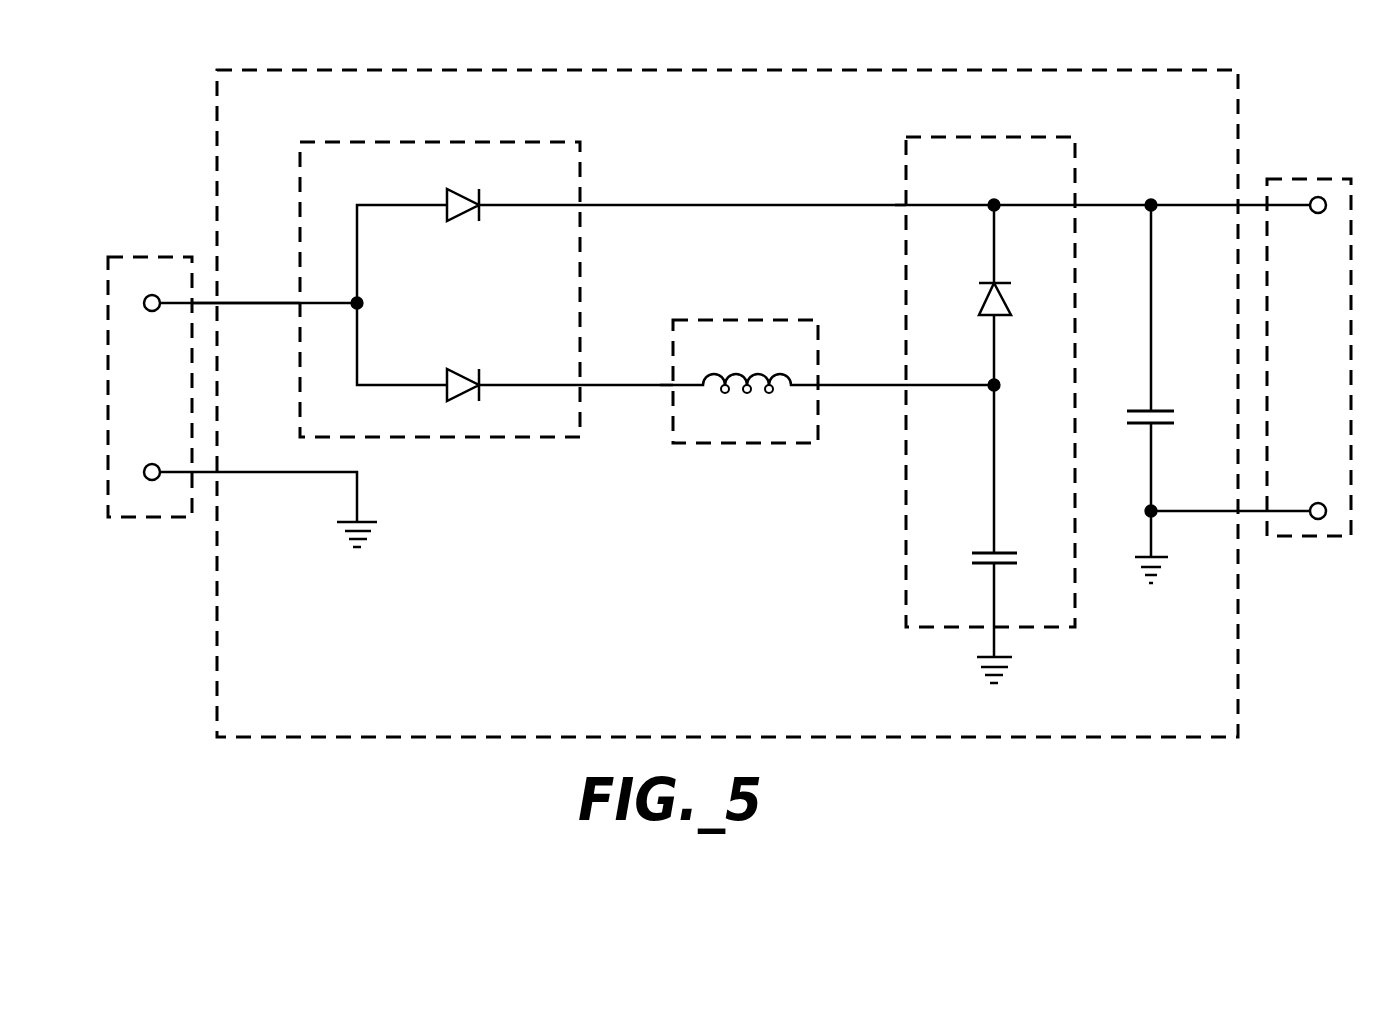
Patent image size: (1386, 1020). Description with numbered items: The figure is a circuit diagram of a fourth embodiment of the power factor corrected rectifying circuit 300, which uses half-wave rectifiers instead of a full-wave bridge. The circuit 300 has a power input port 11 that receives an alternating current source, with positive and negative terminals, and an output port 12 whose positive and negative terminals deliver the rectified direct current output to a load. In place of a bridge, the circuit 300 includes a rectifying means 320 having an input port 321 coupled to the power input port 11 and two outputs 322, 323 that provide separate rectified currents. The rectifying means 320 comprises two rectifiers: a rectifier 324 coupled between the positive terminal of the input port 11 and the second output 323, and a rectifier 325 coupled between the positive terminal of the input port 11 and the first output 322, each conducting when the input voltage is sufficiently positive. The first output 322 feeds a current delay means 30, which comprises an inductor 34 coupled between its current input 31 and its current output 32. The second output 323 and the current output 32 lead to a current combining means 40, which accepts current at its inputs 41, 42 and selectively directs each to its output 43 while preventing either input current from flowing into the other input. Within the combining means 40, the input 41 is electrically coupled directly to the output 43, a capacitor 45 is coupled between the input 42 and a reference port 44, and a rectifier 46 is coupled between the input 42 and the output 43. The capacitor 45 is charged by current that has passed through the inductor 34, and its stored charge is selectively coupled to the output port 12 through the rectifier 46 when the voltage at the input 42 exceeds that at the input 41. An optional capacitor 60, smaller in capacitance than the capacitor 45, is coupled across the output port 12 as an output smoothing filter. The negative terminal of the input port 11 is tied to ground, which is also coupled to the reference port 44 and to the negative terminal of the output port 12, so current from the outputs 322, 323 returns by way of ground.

The power factor corrected rectifying circuit 300 is at (208, 690).
The power input port 11 is at (190, 256).
The output port 12 is at (1282, 160).
The rectifying means 320 is at (428, 130).
The input port 321 is at (300, 300).
The first output 322 is at (581, 392).
The second output 323 is at (584, 202).
The rectifier 324 is at (464, 190).
The rectifier 325 is at (464, 372).
The current delay means 30 is at (742, 310).
The current input 31 is at (672, 382).
The current output 32 is at (820, 382).
The inductor 34 is at (740, 393).
The current combining means 40 is at (972, 125).
The input 41 is at (904, 202).
The input 42 is at (905, 392).
The output 43 is at (1077, 202).
The reference port 44 is at (992, 632).
The capacitor 45 is at (987, 552).
The rectifier 46 is at (986, 282).
The capacitor 60 is at (1160, 410).